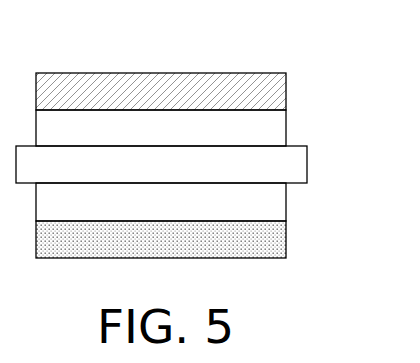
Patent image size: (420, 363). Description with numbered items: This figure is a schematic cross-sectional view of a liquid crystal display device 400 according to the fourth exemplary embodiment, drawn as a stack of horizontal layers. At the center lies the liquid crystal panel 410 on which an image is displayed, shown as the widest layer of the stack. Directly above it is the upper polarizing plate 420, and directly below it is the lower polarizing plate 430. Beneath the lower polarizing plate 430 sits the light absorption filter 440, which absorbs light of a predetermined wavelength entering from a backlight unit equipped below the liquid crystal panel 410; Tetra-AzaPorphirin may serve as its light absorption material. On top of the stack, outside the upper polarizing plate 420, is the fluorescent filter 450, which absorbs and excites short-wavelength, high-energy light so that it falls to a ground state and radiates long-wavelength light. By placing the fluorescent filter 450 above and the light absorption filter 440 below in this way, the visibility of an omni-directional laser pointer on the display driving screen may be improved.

The liquid crystal display device 400 is at (298, 62).
The liquid crystal panel 410 is at (303, 166).
The upper polarizing plate 420 is at (282, 129).
The lower polarizing plate 430 is at (282, 203).
The light absorption filter 440 is at (282, 242).
The fluorescent filter 450 is at (282, 92).